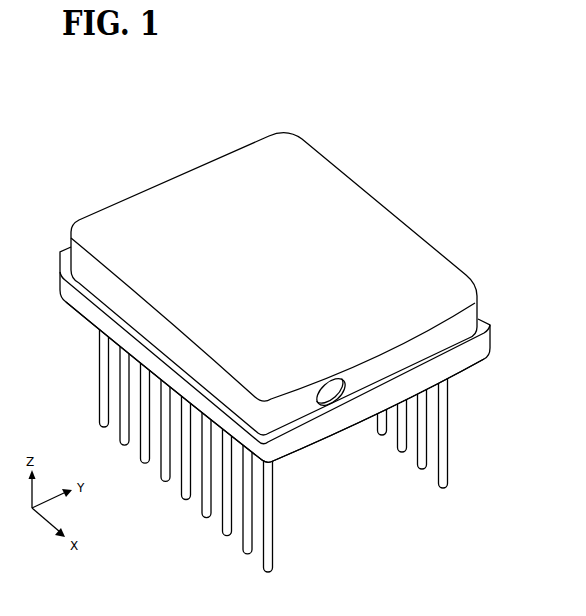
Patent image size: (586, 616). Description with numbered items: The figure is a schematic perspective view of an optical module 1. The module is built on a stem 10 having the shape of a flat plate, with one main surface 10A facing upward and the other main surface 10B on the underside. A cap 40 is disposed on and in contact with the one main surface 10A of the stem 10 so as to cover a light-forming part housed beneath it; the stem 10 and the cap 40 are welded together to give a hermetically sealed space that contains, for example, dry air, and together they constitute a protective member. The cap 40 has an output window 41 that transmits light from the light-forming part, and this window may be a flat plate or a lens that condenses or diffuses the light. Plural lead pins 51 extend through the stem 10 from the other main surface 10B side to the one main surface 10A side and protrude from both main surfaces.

The optical module 1 is at (395, 145).
The stem 10 is at (481, 361).
The one main surface 10A is at (486, 323).
The other main surface 10B is at (457, 368).
The cap 40 is at (426, 243).
The output window 41 is at (335, 408).
The lead pins 51 is at (99, 353).